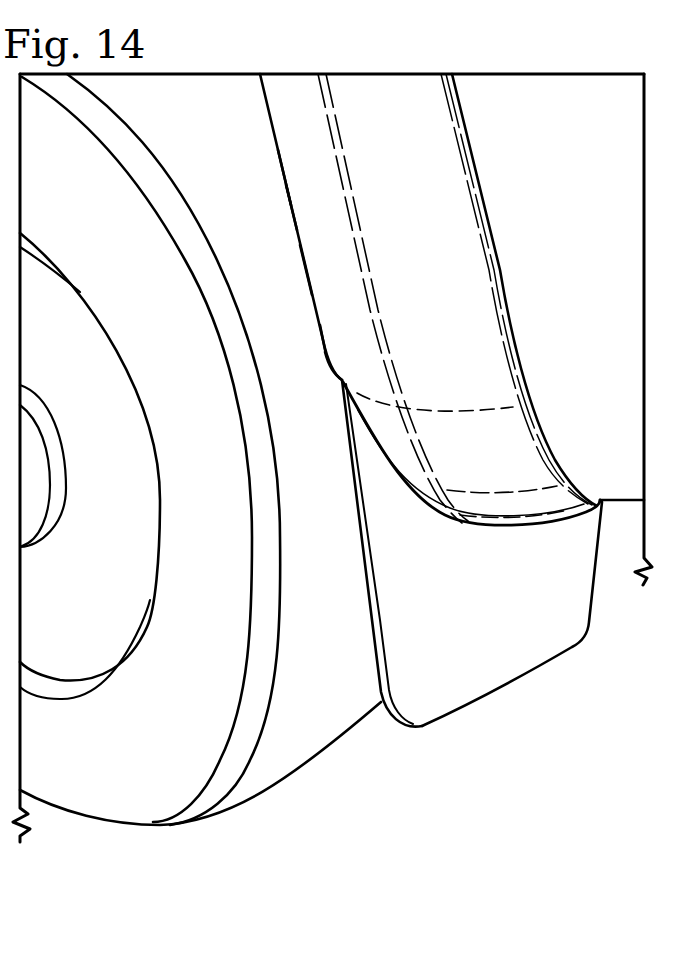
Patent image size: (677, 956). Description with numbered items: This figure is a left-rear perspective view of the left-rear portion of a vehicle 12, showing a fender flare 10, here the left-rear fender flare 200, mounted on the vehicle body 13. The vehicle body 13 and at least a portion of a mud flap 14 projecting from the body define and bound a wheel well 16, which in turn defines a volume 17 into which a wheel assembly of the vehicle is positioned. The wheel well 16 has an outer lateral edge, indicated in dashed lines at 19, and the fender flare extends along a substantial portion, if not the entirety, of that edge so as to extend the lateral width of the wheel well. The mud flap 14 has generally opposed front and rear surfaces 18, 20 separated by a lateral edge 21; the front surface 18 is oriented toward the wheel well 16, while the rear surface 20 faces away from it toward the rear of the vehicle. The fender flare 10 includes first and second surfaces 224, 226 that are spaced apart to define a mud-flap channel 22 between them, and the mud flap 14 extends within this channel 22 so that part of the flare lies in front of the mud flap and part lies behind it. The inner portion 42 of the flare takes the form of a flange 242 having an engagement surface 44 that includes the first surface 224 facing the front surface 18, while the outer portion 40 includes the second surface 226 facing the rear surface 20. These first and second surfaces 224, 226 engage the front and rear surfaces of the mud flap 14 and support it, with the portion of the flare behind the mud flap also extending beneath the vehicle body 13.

The fender flare 10 is at (401, 306).
The left-rear fender flare 200 is at (452, 298).
The vehicle 12 is at (626, 331).
The vehicle body 13 is at (633, 508).
The mud flap 14 is at (496, 696).
The wheel well 16 is at (264, 128).
The volume 17 is at (265, 173).
The front surface 18 is at (365, 562).
The outer lateral edge 19 is at (308, 136).
The rear surface 20 is at (457, 557).
The lateral edge 21 is at (357, 500).
The mud-flap channel 22 is at (331, 386).
The outer portion 40 is at (500, 256).
The inner portion 42 is at (301, 279).
The engagement surface 44 is at (323, 337).
The first surface 224 is at (337, 368).
The second surface 226 is at (390, 475).
The flange 242 is at (288, 202).